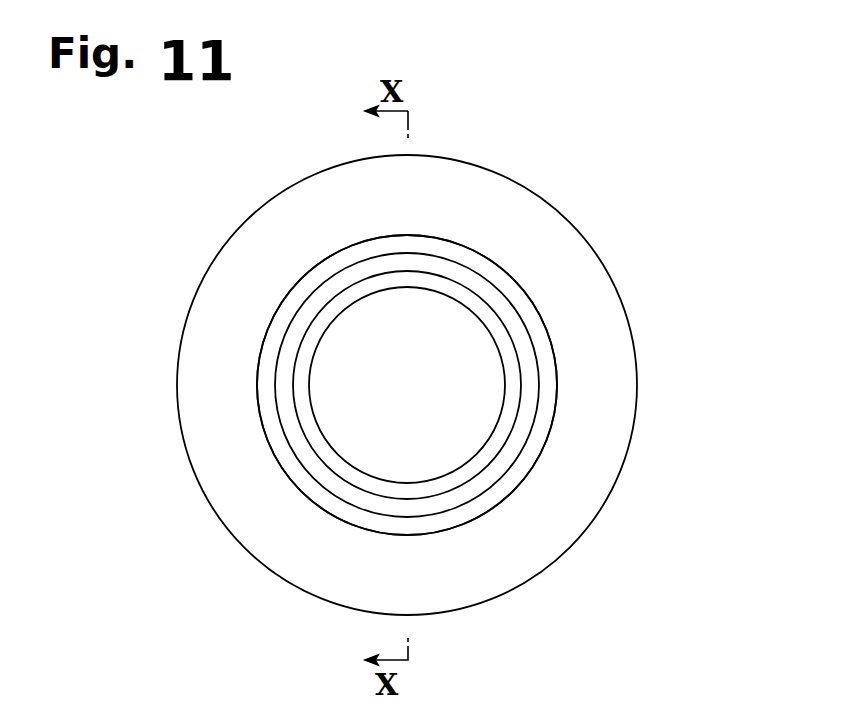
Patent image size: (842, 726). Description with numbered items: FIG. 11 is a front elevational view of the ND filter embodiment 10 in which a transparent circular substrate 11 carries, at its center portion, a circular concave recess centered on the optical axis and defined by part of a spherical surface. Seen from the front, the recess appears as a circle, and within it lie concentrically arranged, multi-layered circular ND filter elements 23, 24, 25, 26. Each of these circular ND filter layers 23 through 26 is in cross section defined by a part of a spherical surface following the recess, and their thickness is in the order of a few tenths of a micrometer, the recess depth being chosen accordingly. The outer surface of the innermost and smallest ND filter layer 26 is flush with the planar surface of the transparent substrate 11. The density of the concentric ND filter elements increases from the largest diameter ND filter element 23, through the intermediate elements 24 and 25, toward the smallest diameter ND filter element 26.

The disc-shaped member / spacer 10 is at (650, 214).
The transparent circular substrate 11 is at (563, 248).
The largest diameter ND filter element 23 is at (533, 315).
The circular ND filter element 24 is at (518, 335).
The circular ND filter element 25 is at (507, 352).
The innermost ND filter layer 26 is at (485, 370).